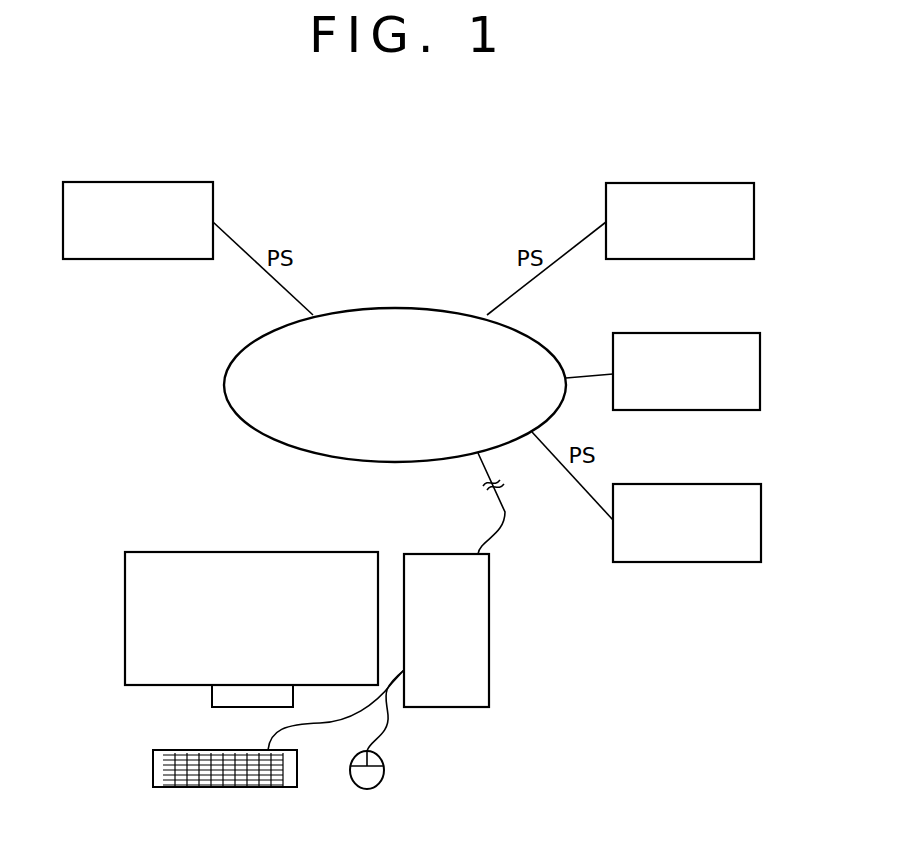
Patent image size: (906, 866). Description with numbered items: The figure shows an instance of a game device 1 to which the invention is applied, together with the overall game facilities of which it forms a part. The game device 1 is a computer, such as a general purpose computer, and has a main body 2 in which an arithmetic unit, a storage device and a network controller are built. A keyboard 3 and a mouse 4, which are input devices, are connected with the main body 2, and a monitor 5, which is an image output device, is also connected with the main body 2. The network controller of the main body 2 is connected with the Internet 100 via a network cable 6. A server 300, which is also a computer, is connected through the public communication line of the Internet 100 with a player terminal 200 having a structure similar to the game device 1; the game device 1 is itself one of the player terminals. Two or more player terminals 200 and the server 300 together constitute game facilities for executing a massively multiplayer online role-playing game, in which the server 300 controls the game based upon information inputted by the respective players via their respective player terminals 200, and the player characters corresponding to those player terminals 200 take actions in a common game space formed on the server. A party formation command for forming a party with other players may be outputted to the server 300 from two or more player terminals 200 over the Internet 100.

The game device 1 is at (133, 526).
The main body 2 is at (449, 554).
The keyboard 3 is at (273, 787).
The mouse 4 is at (385, 777).
The monitor 5 is at (277, 552).
The network cable 6 is at (504, 504).
The Internet 100 is at (385, 308).
The player terminal 200 is at (680, 259).
The server 300 is at (150, 259).